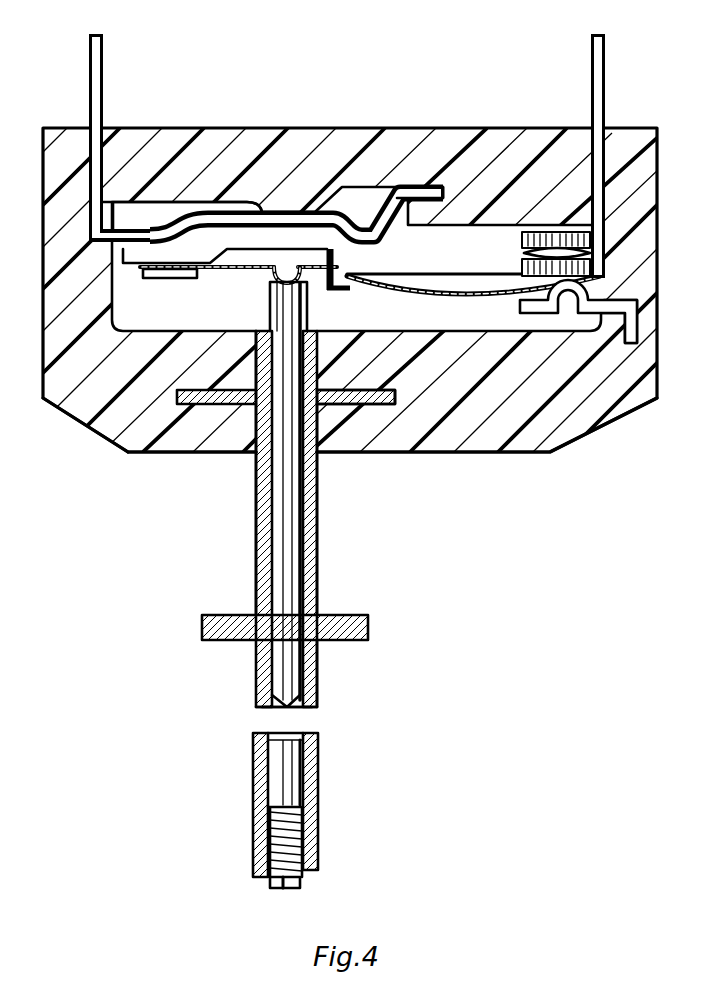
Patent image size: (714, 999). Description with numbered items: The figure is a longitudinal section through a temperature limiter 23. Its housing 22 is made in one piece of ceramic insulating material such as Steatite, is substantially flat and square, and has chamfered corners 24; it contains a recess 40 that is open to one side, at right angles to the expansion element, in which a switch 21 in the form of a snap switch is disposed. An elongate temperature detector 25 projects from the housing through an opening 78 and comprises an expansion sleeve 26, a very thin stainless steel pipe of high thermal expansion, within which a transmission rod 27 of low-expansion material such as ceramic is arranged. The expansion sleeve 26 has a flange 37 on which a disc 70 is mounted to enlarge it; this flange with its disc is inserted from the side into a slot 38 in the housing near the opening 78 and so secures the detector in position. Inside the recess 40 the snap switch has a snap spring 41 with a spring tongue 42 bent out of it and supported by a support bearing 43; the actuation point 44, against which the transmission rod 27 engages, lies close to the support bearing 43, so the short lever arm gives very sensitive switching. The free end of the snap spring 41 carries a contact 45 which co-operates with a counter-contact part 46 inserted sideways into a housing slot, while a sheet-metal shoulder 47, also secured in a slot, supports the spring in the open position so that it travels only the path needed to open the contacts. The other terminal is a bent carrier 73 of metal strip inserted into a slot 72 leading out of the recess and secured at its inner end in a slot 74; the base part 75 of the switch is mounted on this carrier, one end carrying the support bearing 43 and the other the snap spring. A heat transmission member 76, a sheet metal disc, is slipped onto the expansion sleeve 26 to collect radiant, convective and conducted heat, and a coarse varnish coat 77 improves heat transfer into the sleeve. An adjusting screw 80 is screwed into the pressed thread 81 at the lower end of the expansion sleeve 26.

The switch 21 is at (216, 273).
The housing 22 is at (98, 408).
The temperature limiter 23 is at (491, 127).
The corners 24 is at (115, 450).
The temperature detector 25 is at (247, 514).
The expansion sleeve 26 is at (318, 692).
The transmission rod 27 is at (318, 542).
The flange 37 is at (338, 393).
The slot 38 is at (397, 398).
The recess 40 is at (131, 302).
The snap spring 41 is at (242, 271).
The spring tongue 42 is at (455, 297).
The support bearing 43 is at (351, 282).
The actuation point 44 is at (290, 284).
The contact 45 is at (594, 268).
The counter-contact part 46 is at (555, 232).
The shoulder 47 is at (565, 292).
The disc 70 is at (367, 410).
The slot 72 is at (107, 127).
The carrier 73 is at (167, 228).
The slot 74 is at (413, 184).
The base part 75 is at (281, 215).
The heat transmission member 76 is at (227, 628).
The varnish coat 77 is at (318, 666).
The opening 78 is at (252, 346).
The adjusting screw 80 is at (278, 886).
The thread 81 is at (318, 808).